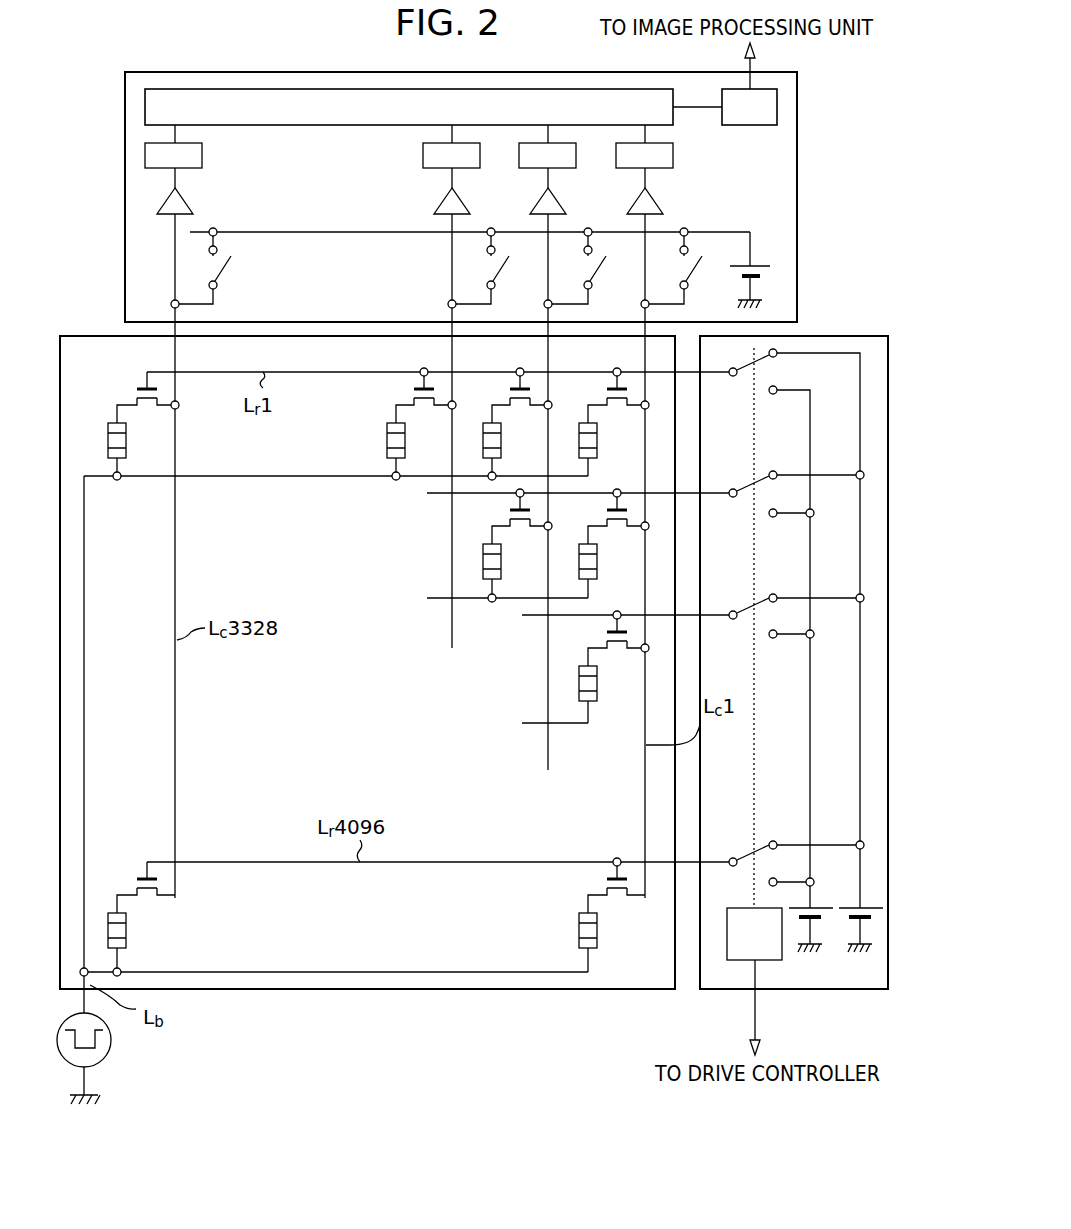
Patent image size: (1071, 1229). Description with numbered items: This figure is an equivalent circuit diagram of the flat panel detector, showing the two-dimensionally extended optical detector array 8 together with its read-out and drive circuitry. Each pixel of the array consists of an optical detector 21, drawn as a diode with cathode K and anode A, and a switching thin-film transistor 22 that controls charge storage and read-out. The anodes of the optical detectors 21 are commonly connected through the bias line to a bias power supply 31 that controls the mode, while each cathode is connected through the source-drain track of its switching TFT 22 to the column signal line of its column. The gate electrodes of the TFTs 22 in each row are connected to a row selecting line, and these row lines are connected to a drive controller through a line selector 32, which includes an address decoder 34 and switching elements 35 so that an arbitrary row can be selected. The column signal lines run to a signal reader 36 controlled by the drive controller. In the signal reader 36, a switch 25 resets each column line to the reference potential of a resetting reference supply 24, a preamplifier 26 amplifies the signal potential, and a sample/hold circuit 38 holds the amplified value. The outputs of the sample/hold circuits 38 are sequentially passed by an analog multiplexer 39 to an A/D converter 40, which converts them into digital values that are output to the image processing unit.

The sensor panel 8 is at (478, 990).
The optical detector 21 is at (127, 440).
The switching thin-film transistor 22 is at (160, 407).
The resetting reference supply 24 is at (762, 265).
The switch 25 is at (226, 270).
The preamplifier 26 is at (192, 199).
The bias power supply 31 is at (112, 1040).
The line selector 32 is at (825, 990).
The address decoder 34 is at (738, 955).
The switching elements 35 is at (755, 850).
The signal reader 36 is at (127, 282).
The sample/hold circuit 38 is at (202, 157).
The analog multiplexer 39 is at (336, 125).
The A/D converter 40 is at (749, 125).